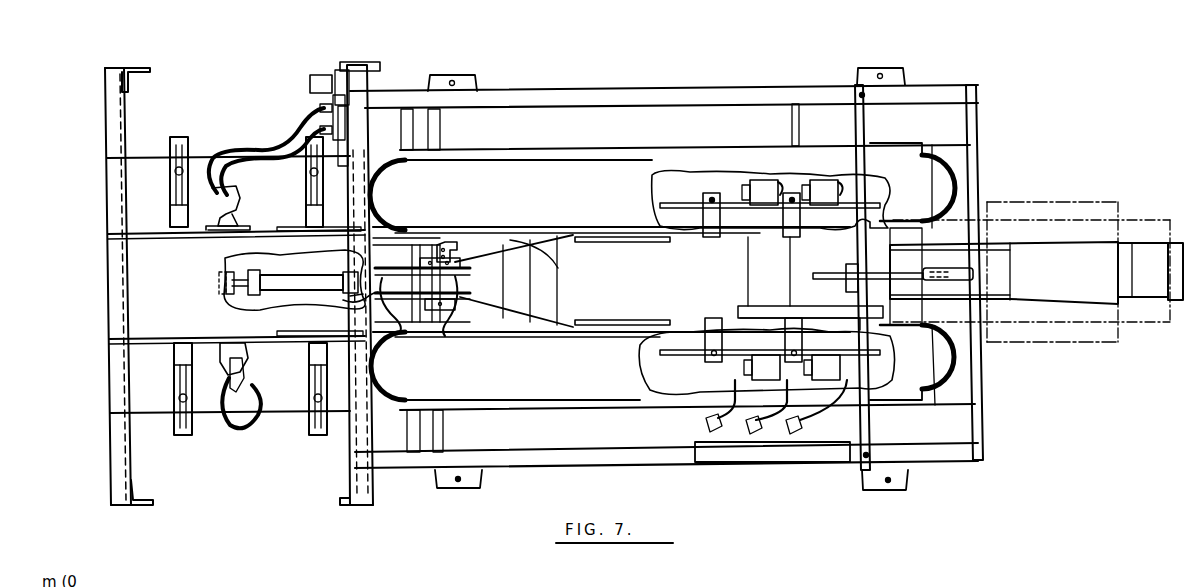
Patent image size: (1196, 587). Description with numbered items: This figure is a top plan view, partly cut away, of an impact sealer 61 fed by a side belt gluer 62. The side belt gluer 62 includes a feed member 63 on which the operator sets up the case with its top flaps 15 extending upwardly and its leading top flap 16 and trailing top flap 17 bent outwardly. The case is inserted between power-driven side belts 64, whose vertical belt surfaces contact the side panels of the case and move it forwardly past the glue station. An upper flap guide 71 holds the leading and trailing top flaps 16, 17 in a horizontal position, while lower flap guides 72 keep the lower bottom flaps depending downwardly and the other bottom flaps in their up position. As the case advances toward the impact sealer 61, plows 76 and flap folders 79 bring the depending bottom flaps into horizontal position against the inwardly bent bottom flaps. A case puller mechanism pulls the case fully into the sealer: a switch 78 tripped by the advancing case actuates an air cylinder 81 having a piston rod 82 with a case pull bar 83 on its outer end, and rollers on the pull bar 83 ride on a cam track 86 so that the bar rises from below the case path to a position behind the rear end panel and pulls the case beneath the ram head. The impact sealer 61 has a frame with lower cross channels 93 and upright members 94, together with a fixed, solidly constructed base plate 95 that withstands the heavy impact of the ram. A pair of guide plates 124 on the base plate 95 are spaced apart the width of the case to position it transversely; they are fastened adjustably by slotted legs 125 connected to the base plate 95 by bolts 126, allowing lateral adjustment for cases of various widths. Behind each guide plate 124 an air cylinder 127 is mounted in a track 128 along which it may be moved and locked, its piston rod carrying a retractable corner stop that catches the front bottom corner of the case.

The top flaps 15 is at (1055, 203).
The leading top flap 16 is at (960, 236).
The trailing top flap 17 is at (1152, 221).
The impact sealer 61 is at (308, 42).
The side belt gluer 62 is at (770, 40).
The feed member 63 is at (1113, 302).
The side belts 64 is at (478, 232).
The upper flap guide 71 is at (829, 280).
The lower flap guides 72 is at (620, 320).
The plows 76 is at (535, 325).
The switch 78 is at (438, 246).
The flap folders 79 is at (490, 303).
The air cylinder 81 is at (299, 285).
The piston rod 82 is at (352, 300).
The case pull bar 83 is at (662, 271).
The cam track 86 is at (450, 322).
The lower cross channels 93 is at (112, 134).
The upright members 94 is at (142, 68).
The base plate 95 is at (113, 298).
The guide plates 124 is at (160, 238).
The slotted legs 125 is at (190, 142).
The bolts 126 is at (175, 175).
The air cylinder 127 is at (238, 198).
The track 128 is at (278, 229).